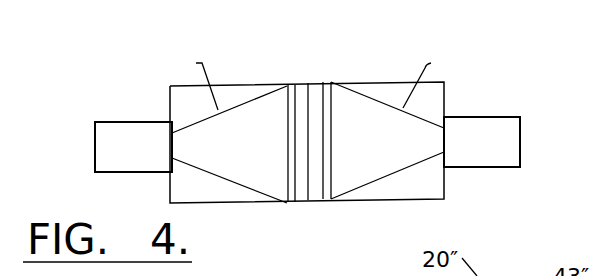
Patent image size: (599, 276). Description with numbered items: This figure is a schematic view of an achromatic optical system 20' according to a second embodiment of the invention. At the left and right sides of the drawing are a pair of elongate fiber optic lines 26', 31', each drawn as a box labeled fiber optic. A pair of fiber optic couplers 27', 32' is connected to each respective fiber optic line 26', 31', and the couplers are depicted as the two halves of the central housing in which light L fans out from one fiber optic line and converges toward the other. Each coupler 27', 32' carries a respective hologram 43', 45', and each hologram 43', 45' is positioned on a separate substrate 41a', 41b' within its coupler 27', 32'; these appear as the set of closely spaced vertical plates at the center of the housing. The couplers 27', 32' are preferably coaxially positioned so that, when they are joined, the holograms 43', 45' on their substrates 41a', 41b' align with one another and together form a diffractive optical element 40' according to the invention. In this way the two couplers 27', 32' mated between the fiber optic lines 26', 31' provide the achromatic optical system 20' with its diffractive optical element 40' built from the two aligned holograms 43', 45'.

The achromatic optical system 20' is at (263, 109).
The fiber optic line 26' is at (127, 124).
The fiber optic coupler 27' is at (229, 114).
The fiber optic line 31' is at (489, 124).
The fiber optic coupler 32' is at (401, 144).
The diffractive optical element 40' is at (338, 107).
The substrate 41a' is at (275, 160).
The substrate 41b' is at (340, 194).
The hologram 43' is at (266, 124).
The hologram 45' is at (348, 122).